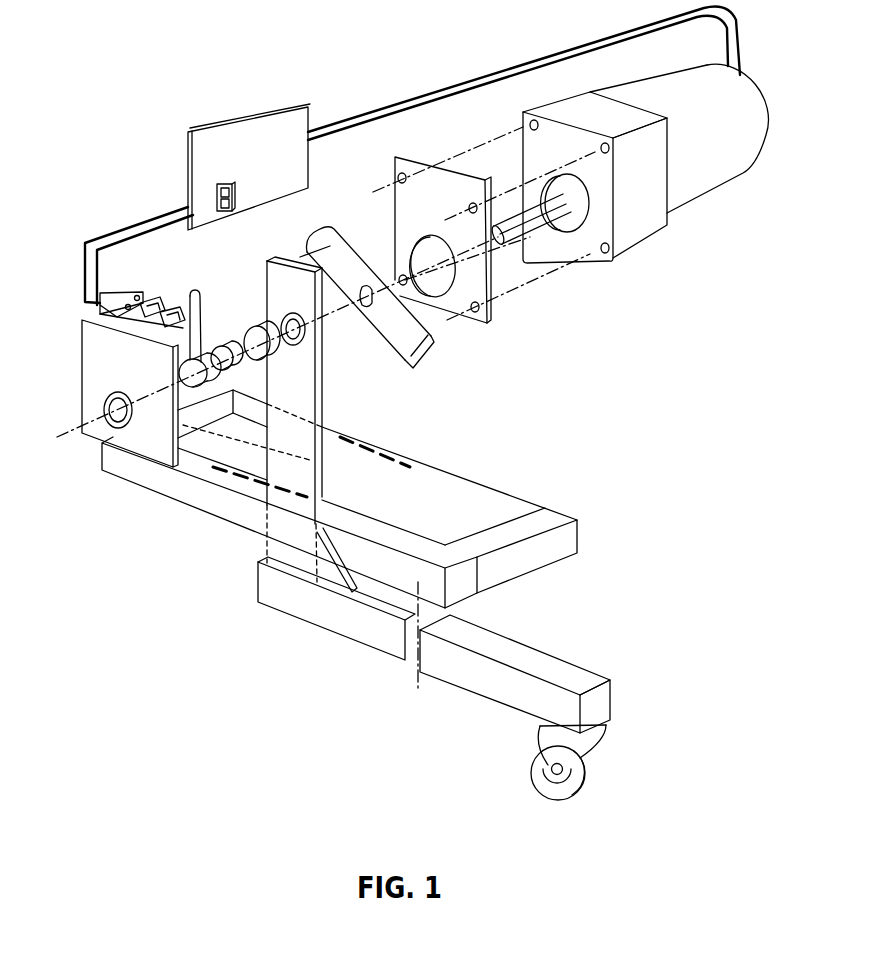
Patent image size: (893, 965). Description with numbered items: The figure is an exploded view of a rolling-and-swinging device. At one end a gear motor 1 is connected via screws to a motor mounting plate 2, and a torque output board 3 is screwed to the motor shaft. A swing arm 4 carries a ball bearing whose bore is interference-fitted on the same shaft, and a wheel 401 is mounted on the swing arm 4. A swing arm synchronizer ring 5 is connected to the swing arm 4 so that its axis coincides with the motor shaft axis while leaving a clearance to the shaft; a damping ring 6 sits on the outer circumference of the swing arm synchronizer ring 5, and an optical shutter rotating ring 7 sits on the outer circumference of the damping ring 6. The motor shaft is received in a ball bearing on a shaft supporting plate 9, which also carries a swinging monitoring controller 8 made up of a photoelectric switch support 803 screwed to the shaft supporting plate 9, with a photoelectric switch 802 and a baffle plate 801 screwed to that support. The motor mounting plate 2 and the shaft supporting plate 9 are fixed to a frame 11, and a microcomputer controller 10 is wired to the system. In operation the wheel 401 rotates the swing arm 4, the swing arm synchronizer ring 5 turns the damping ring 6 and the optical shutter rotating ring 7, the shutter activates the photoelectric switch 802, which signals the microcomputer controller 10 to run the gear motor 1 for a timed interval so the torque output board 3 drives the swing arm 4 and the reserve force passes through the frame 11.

The gear motor 1 is at (683, 193).
The motor mounting plate 2 is at (490, 301).
The torque output board 3 is at (407, 333).
The swing arm 4 is at (406, 352).
The swing arm synchronizer ring 5 is at (318, 345).
The damping ring 6 is at (240, 364).
The optical shutter rotating ring 7 is at (215, 372).
The swinging monitoring controller 8 is at (96, 307).
The baffle plate 801 is at (111, 325).
The photoelectric switch 802 is at (140, 308).
The photoelectric switch support 803 is at (117, 293).
The shaft supporting plate 9 is at (95, 378).
The microcomputer controller 10 is at (250, 197).
The frame 11 is at (495, 572).
The wheel 401 is at (587, 769).